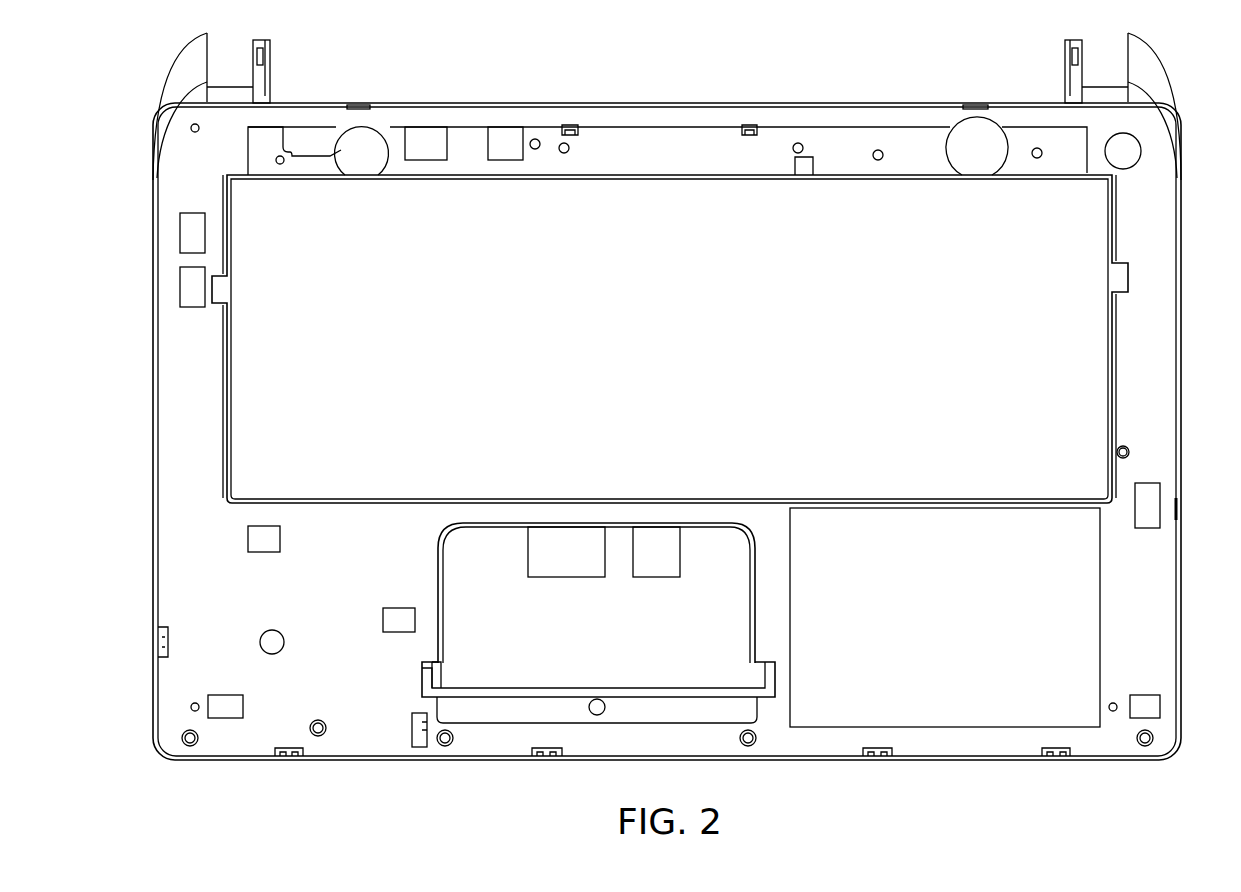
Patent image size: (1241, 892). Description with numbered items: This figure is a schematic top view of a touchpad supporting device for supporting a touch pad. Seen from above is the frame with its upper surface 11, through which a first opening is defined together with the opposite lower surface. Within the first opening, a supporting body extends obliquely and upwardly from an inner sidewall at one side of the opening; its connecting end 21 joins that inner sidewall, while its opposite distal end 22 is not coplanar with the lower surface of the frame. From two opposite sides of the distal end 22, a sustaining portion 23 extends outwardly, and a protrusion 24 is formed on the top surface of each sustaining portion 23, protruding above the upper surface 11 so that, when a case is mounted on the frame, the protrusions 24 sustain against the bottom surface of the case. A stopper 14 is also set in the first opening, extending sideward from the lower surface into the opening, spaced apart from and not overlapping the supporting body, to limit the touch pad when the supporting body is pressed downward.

The upper surface 11 is at (1157, 642).
The stopper 14 is at (565, 710).
The connecting end 21 is at (612, 527).
The distal end 22 is at (710, 678).
The sustaining portion 23 is at (442, 678).
The protrusion 24 is at (427, 678).